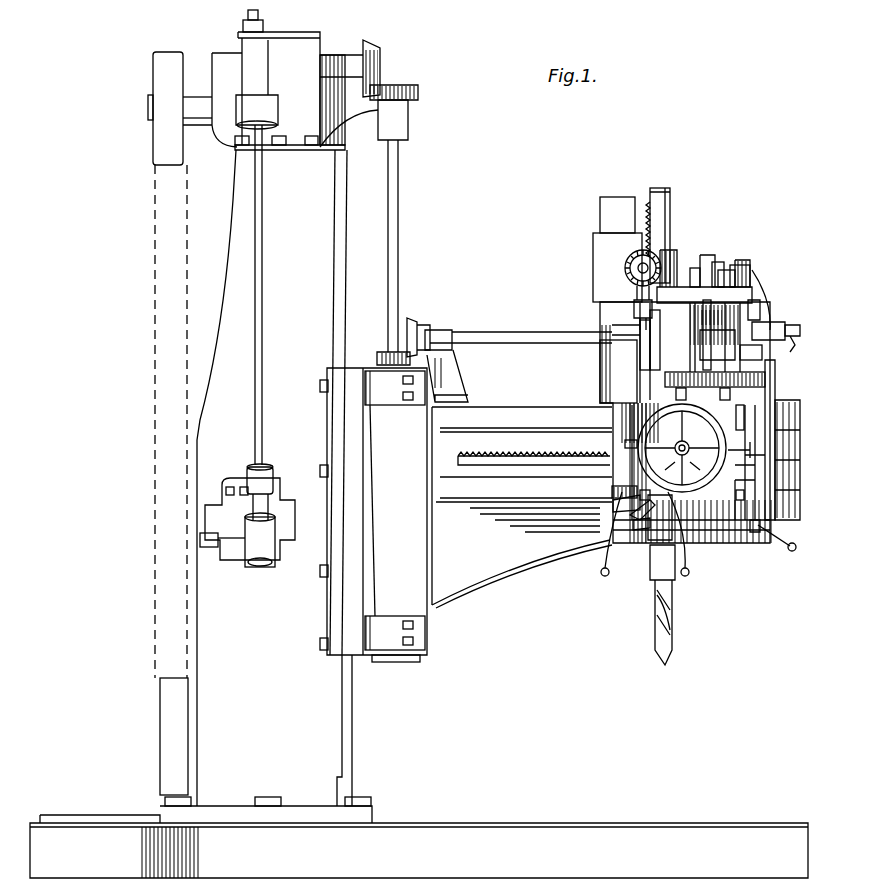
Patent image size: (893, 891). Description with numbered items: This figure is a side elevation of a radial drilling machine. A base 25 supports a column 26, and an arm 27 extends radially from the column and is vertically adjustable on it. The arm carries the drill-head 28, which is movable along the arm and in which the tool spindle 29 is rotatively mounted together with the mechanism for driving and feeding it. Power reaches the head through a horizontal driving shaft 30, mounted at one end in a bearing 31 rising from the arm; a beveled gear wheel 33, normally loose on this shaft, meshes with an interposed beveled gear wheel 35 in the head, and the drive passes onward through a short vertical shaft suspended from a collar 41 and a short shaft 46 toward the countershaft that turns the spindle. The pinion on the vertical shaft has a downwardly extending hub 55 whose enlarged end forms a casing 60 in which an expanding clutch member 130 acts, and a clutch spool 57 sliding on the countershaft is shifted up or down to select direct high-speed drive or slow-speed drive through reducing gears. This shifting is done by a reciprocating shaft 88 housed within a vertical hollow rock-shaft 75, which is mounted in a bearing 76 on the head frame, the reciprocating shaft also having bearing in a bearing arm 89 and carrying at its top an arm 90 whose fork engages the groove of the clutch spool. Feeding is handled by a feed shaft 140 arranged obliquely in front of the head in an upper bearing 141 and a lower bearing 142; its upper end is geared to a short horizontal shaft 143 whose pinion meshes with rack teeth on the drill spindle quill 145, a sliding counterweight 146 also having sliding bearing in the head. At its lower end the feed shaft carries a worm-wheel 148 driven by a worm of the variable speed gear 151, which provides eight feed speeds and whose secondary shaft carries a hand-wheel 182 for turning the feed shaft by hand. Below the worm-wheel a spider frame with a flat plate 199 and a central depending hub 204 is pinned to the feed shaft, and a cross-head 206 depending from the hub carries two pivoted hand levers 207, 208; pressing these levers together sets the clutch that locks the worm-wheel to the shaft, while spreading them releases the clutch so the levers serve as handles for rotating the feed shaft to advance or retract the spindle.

The base 25 is at (419, 842).
The column 26 is at (263, 478).
The arm 27 is at (512, 560).
The drill-head 28 is at (588, 225).
The tool spindle 29 is at (650, 578).
The driving shaft 30 is at (468, 340).
The bearing 31 is at (452, 395).
The beveled gear wheel 33 is at (610, 343).
The interposed beveled gear wheel 35 is at (700, 330).
The collar 41 is at (736, 268).
The short shaft 46 is at (612, 328).
The hub 55 is at (718, 262).
The clutch spool 57 is at (690, 360).
The casing 60 is at (706, 300).
The hollow rock-shaft 75 is at (780, 415).
The bearing 76 is at (768, 395).
The reciprocating shaft 88 is at (760, 325).
The bearing arm 89 is at (756, 315).
The arm 90 is at (762, 352).
The expanding clutch member 130 is at (795, 332).
The feed shaft 140 is at (640, 352).
The upper bearing 141 is at (650, 315).
The lower bearing 142 is at (632, 437).
The short horizontal shaft 143 is at (625, 272).
The drill spindle quill 145 is at (655, 188).
The sliding counterweight 146 is at (612, 197).
The worm-wheel 148 is at (612, 490).
The variable speed gear 151 is at (708, 505).
The hand-wheel 182 is at (752, 535).
The flat plate 199 is at (612, 505).
The hub 204 is at (630, 517).
The cross-head 206 is at (633, 525).
The hand lever 207 is at (593, 539).
The hand lever 208 is at (653, 534).